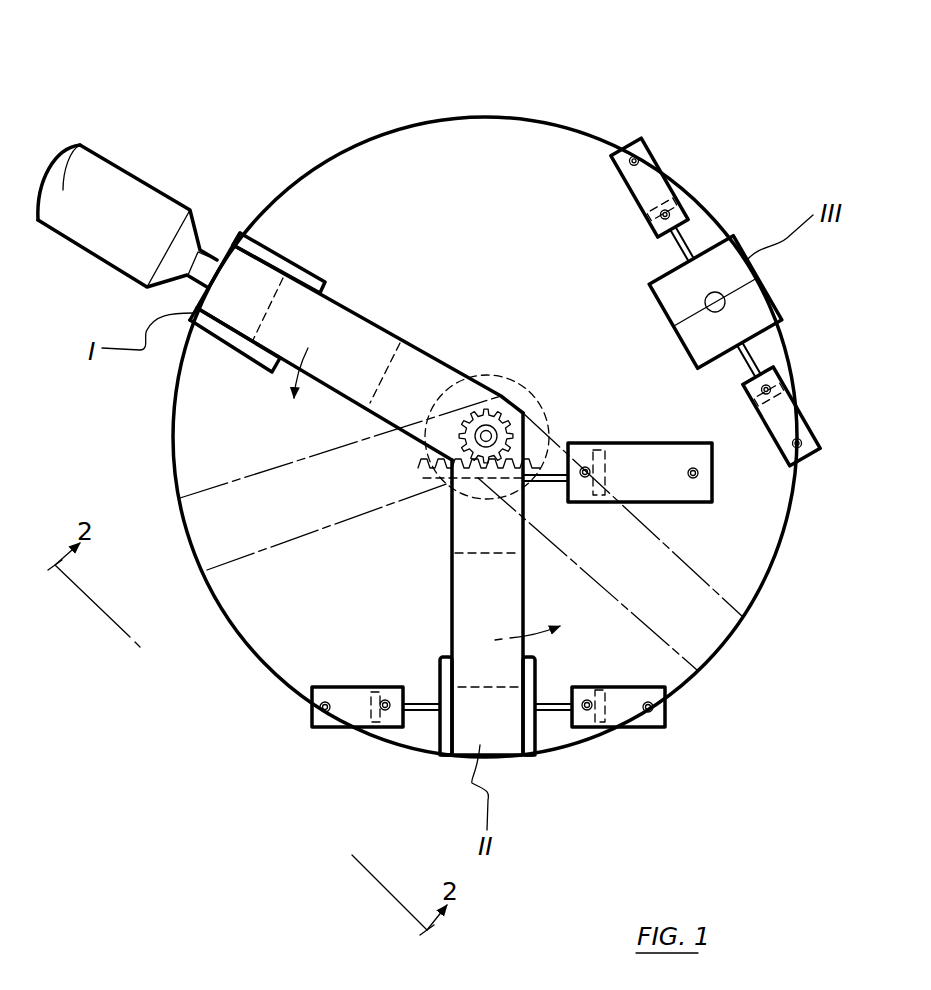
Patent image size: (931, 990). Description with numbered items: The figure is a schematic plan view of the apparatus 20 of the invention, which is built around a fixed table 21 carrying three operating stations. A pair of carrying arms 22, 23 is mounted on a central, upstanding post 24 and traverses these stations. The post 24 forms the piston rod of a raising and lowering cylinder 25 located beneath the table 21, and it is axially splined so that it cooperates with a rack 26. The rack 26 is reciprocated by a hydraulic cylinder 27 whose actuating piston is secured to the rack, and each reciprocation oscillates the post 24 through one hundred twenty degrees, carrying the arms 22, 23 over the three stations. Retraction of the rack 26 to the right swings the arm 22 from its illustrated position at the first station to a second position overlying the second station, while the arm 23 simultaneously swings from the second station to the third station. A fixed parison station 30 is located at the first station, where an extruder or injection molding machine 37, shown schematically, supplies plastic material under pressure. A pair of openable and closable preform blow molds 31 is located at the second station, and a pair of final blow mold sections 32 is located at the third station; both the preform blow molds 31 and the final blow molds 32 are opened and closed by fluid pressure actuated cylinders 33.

The apparatus 20 is at (348, 125).
The fixed table 21 is at (497, 181).
The carrying arm 22 is at (352, 359).
The carrying arm 23 is at (500, 604).
The central upstanding post 24 is at (450, 408).
The raising and lowering cylinder 25 is at (506, 380).
The rack 26 is at (426, 480).
The hydraulic cylinder 27 is at (690, 492).
The parison station 30 is at (340, 285).
The preform blow molds 31 is at (417, 665).
The final blow mold sections 32 is at (770, 288).
The fluid pressure actuated cylinders 33 is at (650, 160).
The extruder or injection molding machine 37 is at (138, 185).